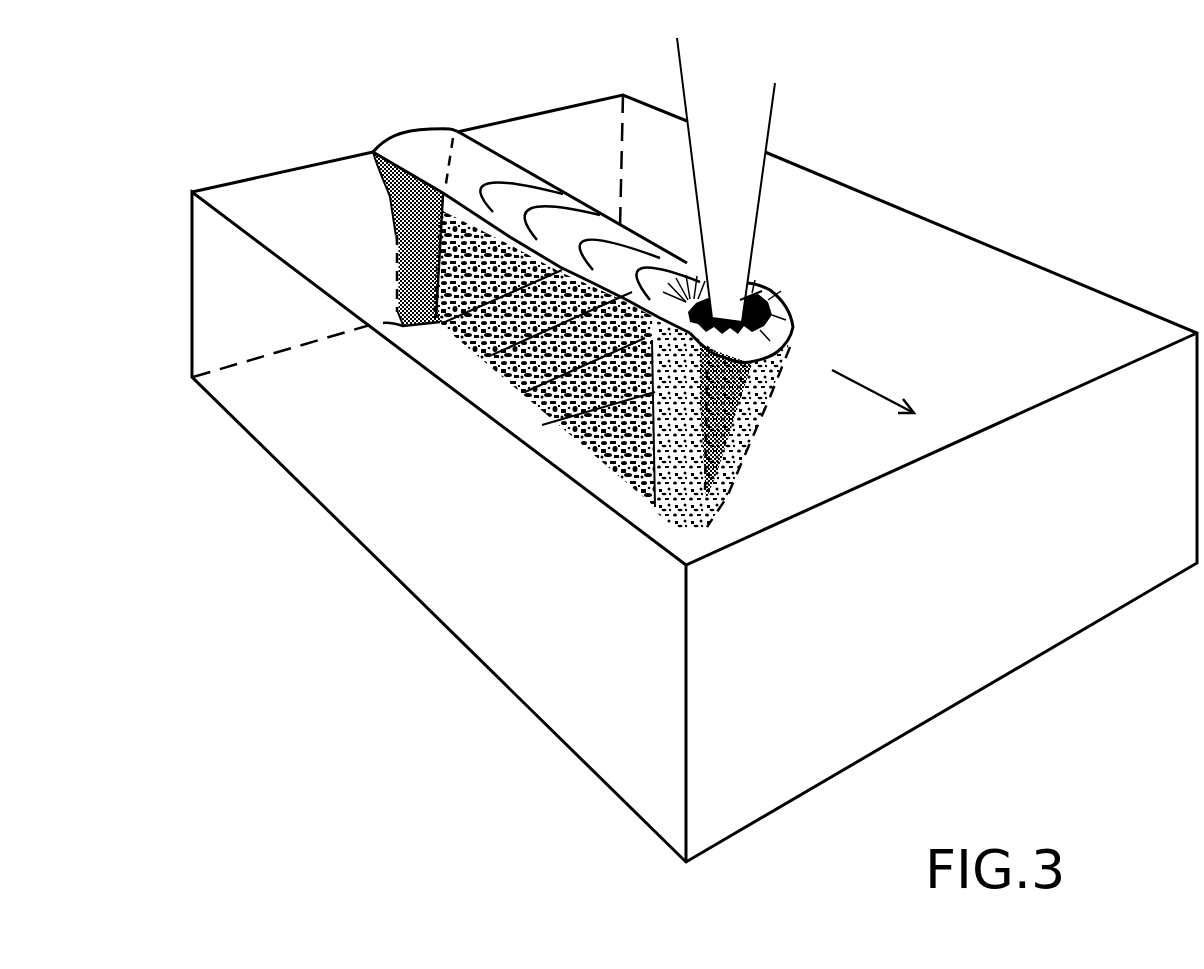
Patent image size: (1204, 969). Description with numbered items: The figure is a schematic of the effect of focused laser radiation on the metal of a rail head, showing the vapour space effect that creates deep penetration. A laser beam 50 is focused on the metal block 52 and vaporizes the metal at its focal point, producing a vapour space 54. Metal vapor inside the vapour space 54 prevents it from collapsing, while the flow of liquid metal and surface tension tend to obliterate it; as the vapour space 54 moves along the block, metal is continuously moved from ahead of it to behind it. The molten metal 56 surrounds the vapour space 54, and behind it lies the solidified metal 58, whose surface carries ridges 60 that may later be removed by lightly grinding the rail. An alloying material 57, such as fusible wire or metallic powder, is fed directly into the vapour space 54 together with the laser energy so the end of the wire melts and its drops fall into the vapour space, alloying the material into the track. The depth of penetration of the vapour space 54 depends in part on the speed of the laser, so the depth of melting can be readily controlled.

The laser beam 50 is at (726, 174).
The metal block 52 is at (1067, 626).
The vapour space 54 is at (760, 290).
The molten metal 56 is at (790, 335).
The alloying material 57 is at (757, 300).
The solidified metal 58 is at (577, 457).
The ridges 60 is at (528, 203).